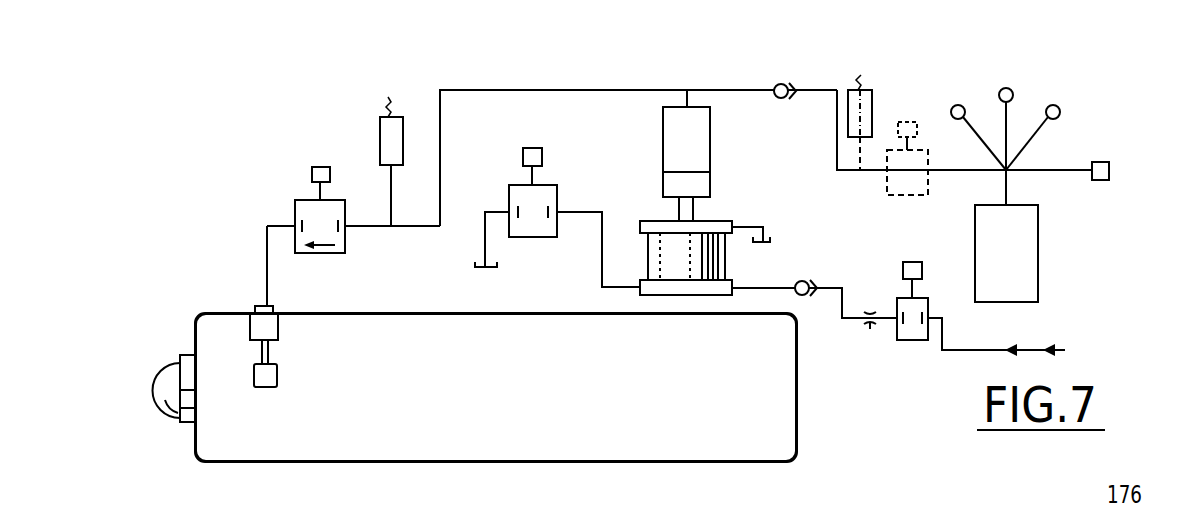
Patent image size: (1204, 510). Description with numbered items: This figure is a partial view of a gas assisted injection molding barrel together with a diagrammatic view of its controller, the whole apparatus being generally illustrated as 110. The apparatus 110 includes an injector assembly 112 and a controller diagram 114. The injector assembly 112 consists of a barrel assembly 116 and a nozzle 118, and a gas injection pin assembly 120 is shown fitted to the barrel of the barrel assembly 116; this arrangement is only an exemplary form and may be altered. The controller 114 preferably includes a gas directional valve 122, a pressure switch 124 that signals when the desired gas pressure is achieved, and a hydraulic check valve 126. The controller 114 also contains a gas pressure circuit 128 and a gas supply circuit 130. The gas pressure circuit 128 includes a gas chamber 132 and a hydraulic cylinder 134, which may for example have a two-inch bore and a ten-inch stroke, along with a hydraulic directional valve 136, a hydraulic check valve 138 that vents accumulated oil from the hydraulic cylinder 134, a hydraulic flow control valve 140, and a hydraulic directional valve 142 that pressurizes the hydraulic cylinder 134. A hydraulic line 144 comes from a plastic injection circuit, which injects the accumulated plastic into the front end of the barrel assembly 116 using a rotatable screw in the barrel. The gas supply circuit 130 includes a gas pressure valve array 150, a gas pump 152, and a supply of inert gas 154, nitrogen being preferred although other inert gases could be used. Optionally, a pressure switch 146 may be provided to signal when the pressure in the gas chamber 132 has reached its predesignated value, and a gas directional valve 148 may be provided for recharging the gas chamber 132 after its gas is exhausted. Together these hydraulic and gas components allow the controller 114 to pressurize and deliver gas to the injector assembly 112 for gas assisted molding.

The apparatus 110 is at (174, 179).
The injector assembly 112 is at (724, 474).
The controller 114 is at (557, 88).
The barrel assembly 116 is at (616, 381).
The nozzle 118 is at (182, 355).
The gas injection pin assembly 120 is at (258, 305).
The gas directional valve 122 is at (311, 172).
The pressure switch 124 is at (380, 135).
The hydraulic check valve 126 is at (780, 101).
The gas pressure circuit 128 is at (642, 203).
The gas supply circuit 130 is at (1000, 50).
The gas chamber 132 is at (711, 154).
The hydraulic cylinder 134 is at (714, 220).
The hydraulic directional valve 136 is at (541, 148).
The hydraulic check valve 138 is at (808, 281).
The hydraulic flow control valve 140 is at (854, 337).
The hydraulic directional valve 142 is at (920, 262).
The hydraulic line 144 is at (1035, 348).
The pressure switch 146 is at (873, 101).
The gas directional valve 148 is at (918, 120).
The gas pressure valve array 150 is at (1013, 93).
The gas pump 152 is at (1112, 171).
The supply of inert gas 154 is at (1038, 251).